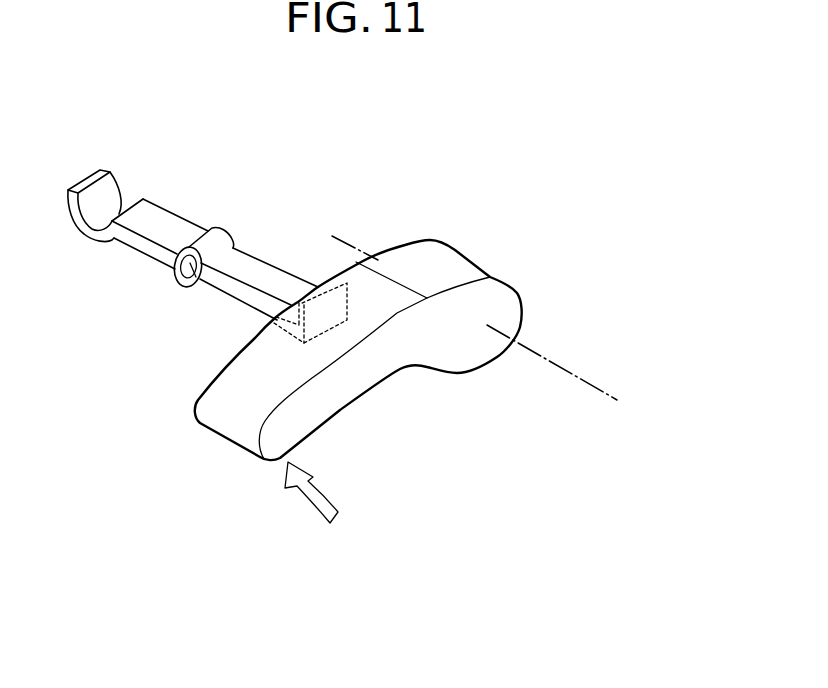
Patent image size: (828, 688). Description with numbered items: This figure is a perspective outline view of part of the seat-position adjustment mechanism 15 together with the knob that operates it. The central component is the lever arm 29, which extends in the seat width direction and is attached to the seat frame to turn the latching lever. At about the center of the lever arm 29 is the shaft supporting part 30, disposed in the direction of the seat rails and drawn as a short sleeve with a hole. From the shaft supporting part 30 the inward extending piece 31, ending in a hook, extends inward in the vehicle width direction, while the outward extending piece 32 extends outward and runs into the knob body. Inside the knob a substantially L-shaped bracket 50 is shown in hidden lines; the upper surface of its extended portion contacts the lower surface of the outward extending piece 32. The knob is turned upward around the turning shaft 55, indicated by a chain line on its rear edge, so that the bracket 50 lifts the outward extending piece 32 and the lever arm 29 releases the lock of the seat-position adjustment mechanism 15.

The seat-position adjustment mechanism 15 is at (423, 176).
The lever arm 29 is at (226, 226).
The shaft supporting part 30 is at (190, 266).
The inward extending piece 31 is at (173, 222).
The outward extending piece 32 is at (277, 274).
The bracket 50 is at (330, 329).
The turning shaft 55 is at (597, 388).